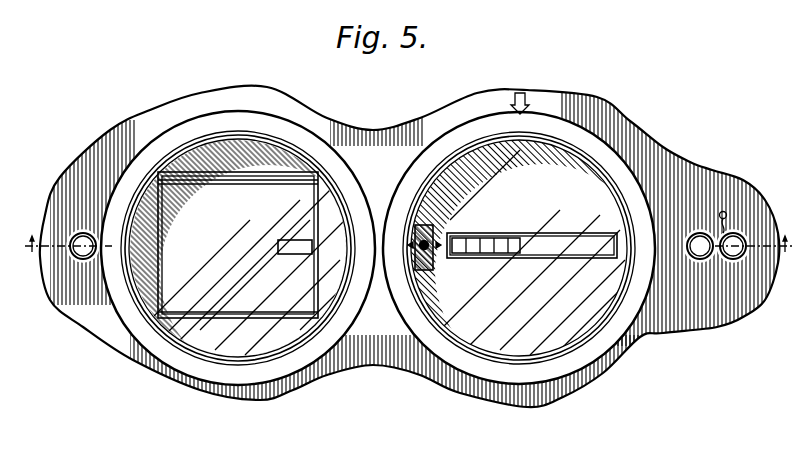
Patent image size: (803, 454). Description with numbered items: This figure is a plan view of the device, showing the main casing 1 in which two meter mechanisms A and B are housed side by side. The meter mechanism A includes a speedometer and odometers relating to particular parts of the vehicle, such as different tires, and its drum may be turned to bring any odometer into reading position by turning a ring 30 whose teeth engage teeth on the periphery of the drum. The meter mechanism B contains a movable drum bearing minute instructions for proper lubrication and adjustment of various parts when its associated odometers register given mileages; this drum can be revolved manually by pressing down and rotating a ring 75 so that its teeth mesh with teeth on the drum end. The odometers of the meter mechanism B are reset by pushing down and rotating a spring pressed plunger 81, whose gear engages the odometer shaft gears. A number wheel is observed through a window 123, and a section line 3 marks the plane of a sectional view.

The main casing 1 is at (710, 171).
The section line 3- 3 is at (406, 245).
The ring 30 is at (461, 353).
The ring 75 is at (163, 352).
The spring pressed plunger 81 is at (84, 260).
The window 123 is at (431, 268).
The meter mechanism A is at (530, 386).
The meter mechanism B is at (233, 372).